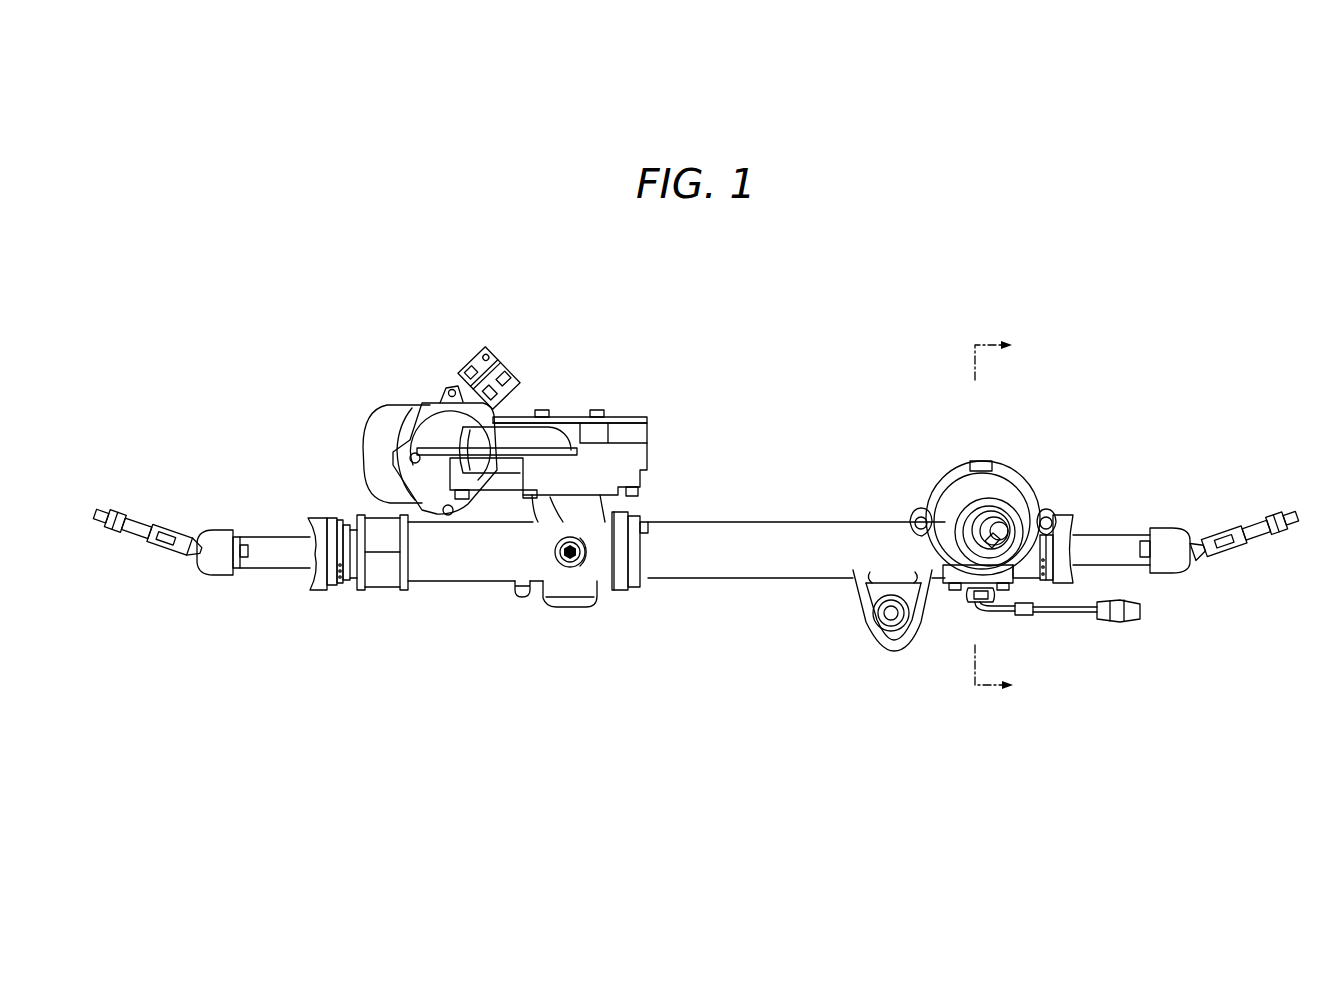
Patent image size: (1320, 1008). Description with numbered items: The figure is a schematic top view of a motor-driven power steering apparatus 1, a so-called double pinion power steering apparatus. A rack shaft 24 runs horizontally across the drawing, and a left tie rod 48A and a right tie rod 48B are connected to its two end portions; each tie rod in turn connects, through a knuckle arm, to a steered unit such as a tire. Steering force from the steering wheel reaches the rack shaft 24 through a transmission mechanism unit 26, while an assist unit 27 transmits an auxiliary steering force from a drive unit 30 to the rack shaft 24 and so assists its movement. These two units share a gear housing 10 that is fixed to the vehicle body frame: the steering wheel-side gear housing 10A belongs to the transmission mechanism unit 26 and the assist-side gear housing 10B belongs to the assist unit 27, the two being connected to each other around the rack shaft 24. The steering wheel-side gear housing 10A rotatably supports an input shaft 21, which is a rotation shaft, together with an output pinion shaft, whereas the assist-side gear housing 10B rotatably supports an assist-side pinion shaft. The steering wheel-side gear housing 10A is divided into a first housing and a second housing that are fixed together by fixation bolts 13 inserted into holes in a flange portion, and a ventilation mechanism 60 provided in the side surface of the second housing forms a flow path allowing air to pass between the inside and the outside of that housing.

The motor-driven power steering apparatus 1 is at (324, 318).
The gear housing 10 is at (777, 515).
The steering wheel-side gear housing 10A is at (1003, 482).
The assist-side gear housing 10B is at (634, 422).
The fixation bolt 13 is at (918, 508).
The input shaft 21 is at (1008, 517).
The rack shaft 24 is at (268, 538).
The transmission mechanism unit 26 is at (940, 632).
The assist unit 27 is at (686, 405).
The drive unit 30 is at (399, 394).
The left tie rod 48A is at (171, 530).
The right tie rod 48B is at (1259, 522).
The ventilation mechanism 60 is at (981, 461).